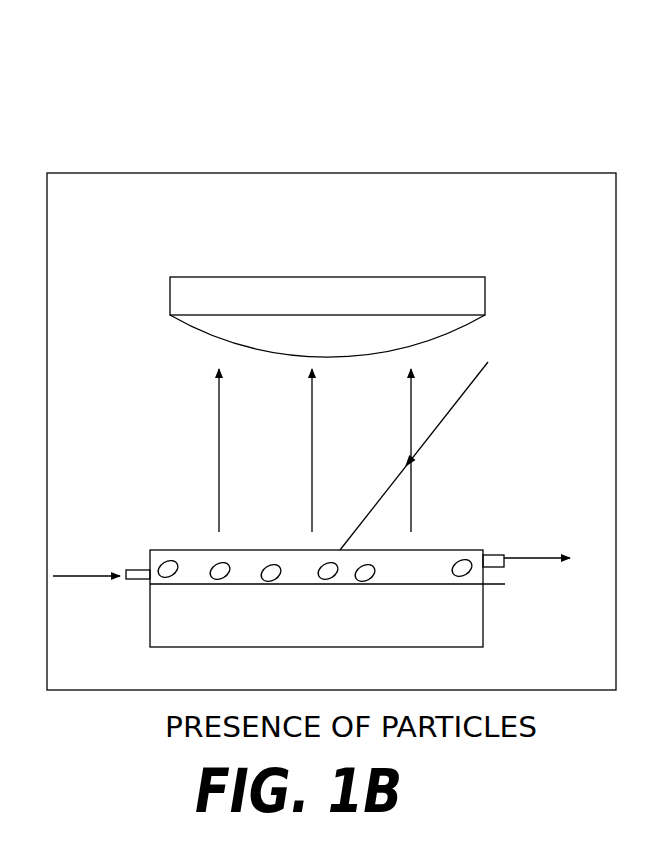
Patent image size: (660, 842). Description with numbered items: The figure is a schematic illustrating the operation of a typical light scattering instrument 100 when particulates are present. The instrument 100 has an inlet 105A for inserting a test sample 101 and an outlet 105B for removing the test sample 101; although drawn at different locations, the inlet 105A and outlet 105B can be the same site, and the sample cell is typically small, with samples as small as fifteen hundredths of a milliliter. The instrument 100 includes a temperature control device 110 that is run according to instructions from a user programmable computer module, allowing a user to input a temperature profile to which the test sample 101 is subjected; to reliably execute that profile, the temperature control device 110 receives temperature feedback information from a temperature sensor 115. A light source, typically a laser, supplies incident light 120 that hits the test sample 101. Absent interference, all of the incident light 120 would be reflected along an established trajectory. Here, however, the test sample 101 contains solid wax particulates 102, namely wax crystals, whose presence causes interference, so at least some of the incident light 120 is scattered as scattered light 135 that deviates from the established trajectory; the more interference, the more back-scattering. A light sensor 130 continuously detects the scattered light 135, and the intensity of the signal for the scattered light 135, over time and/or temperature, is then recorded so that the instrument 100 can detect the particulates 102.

The light scattering instrument 100 is at (157, 166).
The light sensor 130 is at (324, 277).
The scattered light 135 is at (287, 402).
The incident light 120 is at (426, 440).
The temperature control device 110 is at (327, 627).
The temperature sensor 115 is at (492, 587).
The test sample 101 is at (183, 558).
The solid wax particulates 102 is at (466, 562).
The inlet 105A is at (105, 570).
The outlet 105B is at (517, 558).